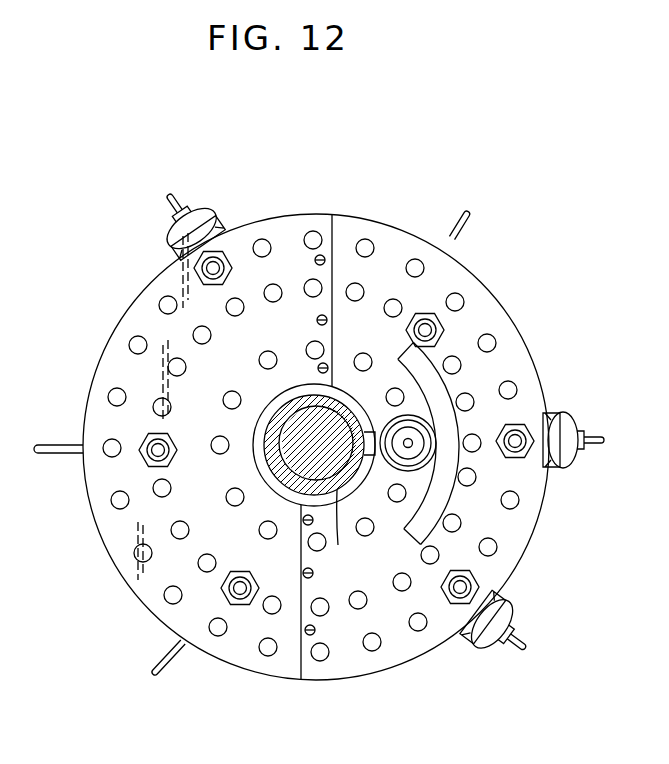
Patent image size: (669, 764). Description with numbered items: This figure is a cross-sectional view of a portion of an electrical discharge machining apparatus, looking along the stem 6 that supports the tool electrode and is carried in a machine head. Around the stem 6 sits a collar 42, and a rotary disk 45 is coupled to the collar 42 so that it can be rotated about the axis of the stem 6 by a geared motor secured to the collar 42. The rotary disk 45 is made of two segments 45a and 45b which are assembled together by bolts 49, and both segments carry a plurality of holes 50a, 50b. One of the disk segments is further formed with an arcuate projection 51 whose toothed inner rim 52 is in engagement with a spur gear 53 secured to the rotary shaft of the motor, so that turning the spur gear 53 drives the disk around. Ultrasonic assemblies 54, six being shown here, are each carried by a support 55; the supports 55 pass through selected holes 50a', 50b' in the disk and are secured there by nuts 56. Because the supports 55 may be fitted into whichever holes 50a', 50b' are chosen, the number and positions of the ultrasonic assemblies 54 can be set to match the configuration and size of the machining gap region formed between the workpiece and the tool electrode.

The stem 6 is at (300, 463).
The collar 42 is at (340, 534).
The rotary disk 45 is at (296, 410).
The disk segment 45a is at (308, 213).
The disk segment 45b is at (492, 299).
The bolts 49 is at (333, 252).
The holes 50a is at (178, 446).
The selected holes 50a' is at (235, 412).
The holes 50b is at (432, 444).
The selected holes 50b' is at (517, 451).
The arcuate projection 51 is at (448, 492).
The toothed inner rim 52 is at (410, 532).
The spur gear 53 is at (404, 440).
The ultrasonic assemblies 54 is at (199, 208).
The supports 55 is at (217, 262).
The nuts 56 is at (428, 313).